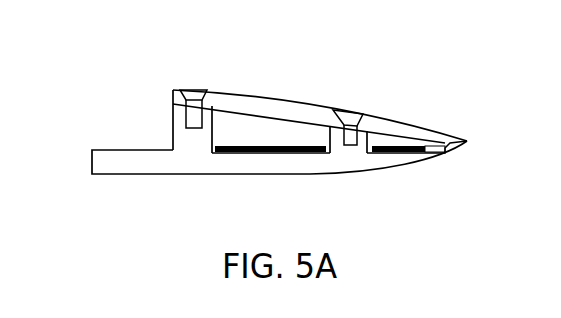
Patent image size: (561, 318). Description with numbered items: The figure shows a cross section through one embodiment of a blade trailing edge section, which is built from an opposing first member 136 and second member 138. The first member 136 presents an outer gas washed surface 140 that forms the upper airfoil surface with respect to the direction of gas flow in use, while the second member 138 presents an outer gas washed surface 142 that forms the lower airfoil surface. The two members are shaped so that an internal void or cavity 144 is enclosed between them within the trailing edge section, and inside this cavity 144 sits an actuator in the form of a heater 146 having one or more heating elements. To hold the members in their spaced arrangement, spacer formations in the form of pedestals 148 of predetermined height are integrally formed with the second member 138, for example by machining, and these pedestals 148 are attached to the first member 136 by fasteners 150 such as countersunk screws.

The first member 136 is at (258, 100).
The second member 138 is at (198, 163).
The outer gas washed surface 140 is at (440, 130).
The outer gas washed surface 142 is at (312, 173).
The internal cavity 144 is at (237, 133).
The heater 146 is at (288, 147).
The pedestals 148 is at (180, 136).
The fasteners 150 is at (199, 90).